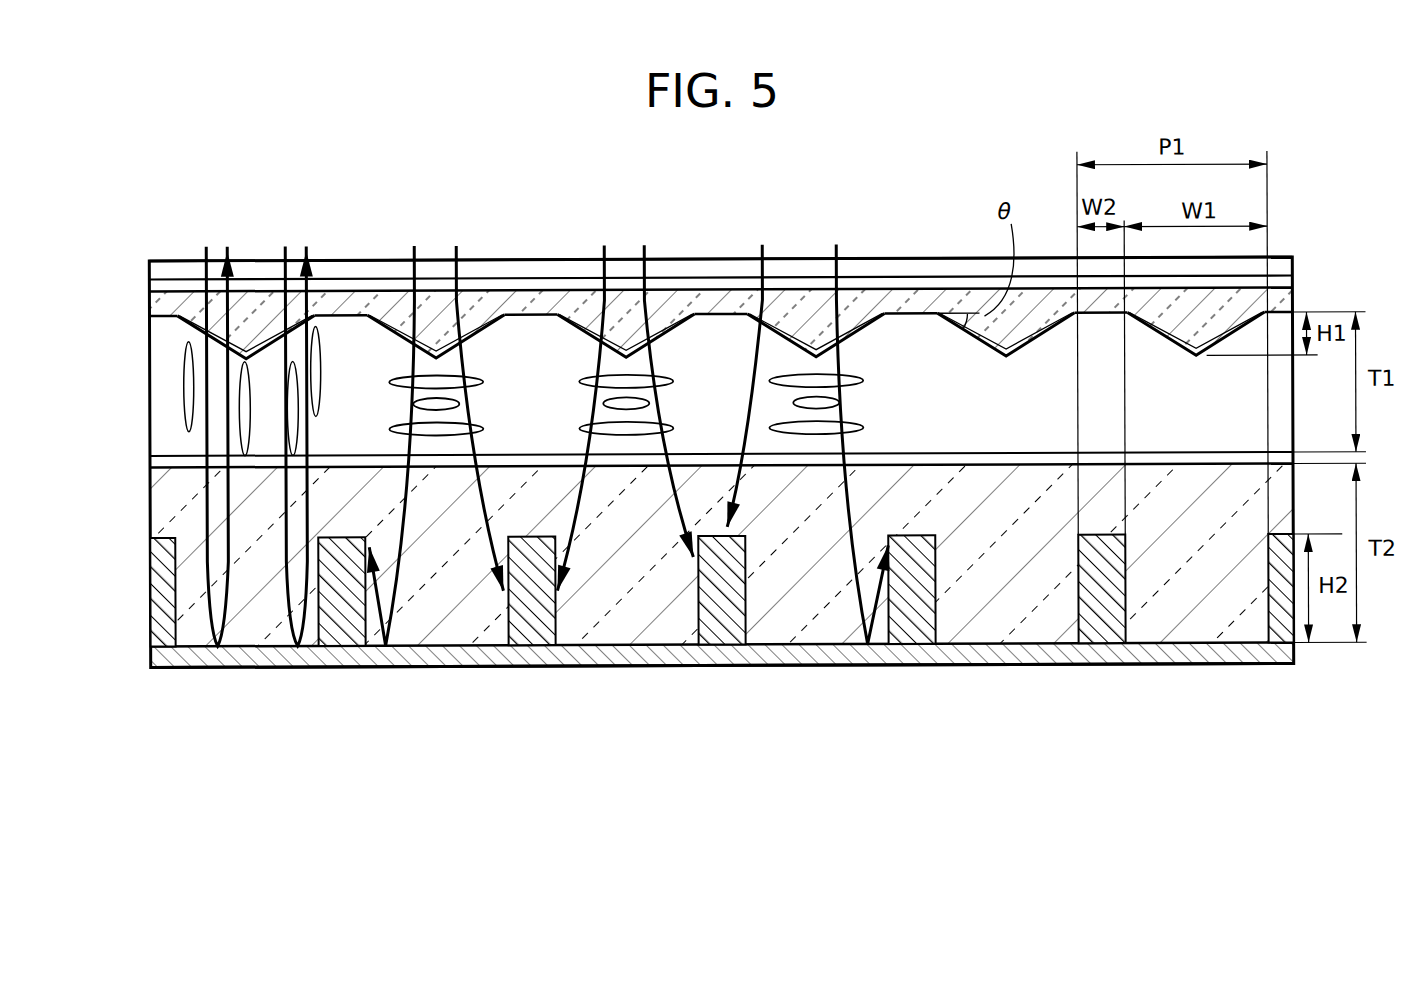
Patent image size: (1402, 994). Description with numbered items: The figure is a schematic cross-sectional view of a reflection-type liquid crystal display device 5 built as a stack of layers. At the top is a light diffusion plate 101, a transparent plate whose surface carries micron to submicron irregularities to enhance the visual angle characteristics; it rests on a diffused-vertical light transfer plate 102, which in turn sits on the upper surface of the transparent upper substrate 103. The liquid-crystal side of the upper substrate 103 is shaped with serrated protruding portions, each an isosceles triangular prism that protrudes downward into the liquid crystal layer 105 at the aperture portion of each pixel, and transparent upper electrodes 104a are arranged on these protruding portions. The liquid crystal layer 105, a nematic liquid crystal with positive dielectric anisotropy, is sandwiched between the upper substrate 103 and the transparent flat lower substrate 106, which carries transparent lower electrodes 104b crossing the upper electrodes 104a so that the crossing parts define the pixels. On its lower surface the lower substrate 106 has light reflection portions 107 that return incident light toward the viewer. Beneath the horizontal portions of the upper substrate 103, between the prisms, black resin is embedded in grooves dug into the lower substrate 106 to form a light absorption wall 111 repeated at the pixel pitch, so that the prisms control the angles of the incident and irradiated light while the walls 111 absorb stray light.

The backlight / display device 5 is at (722, 213).
The light diffusion plate 101 is at (167, 268).
The diffused-vertical light transfer plate 102 is at (167, 285).
The transparent upper substrate 103 is at (163, 302).
The transparent upper electrodes 104a is at (165, 336).
The liquid crystal layer 105 is at (165, 425).
The transparent lower electrodes 104b is at (165, 460).
The transparent flat lower substrate 106 is at (165, 517).
The light reflection portions 107 is at (455, 657).
The light absorption wall 111 is at (722, 623).